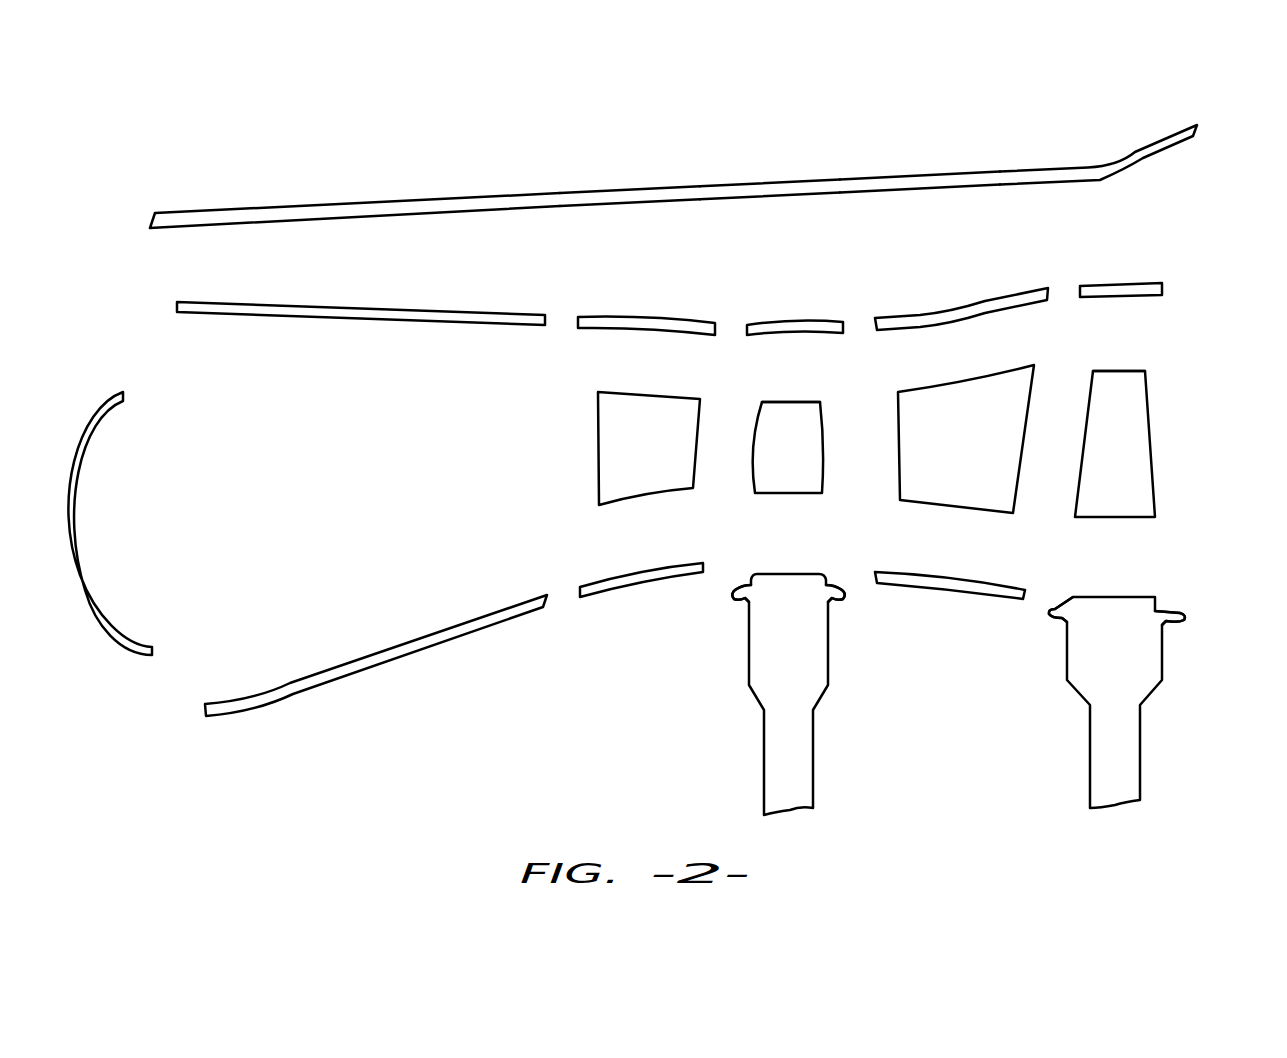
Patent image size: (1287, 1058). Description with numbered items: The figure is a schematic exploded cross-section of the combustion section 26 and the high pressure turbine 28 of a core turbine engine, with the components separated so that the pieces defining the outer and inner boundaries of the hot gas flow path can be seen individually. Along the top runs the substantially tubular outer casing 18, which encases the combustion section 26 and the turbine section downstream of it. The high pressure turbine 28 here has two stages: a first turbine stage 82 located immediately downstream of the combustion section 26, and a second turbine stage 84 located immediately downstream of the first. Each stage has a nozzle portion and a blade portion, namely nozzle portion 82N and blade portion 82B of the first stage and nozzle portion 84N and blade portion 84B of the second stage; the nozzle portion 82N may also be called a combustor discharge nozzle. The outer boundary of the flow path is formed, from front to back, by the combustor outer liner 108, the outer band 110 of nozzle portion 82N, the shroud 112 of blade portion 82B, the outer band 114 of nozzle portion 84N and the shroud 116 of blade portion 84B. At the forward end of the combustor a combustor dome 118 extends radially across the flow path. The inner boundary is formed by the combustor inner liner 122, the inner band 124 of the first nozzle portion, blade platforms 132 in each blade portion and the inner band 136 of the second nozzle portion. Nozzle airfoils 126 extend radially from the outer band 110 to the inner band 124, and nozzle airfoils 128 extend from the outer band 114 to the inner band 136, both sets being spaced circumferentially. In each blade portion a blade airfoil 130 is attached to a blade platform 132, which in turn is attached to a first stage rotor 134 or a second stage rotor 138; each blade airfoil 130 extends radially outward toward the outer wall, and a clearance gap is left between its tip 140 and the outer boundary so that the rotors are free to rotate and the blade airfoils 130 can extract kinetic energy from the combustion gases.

The outer casing 18 is at (275, 212).
The combustion section 26 is at (397, 170).
The high pressure turbine 28 is at (890, 138).
The first turbine stage 82 is at (717, 142).
The nozzle portion of first turbine stage 82N is at (650, 235).
The blade portion of first turbine stage 82B is at (774, 255).
The second turbine stage 84 is at (1029, 132).
The nozzle portion of second turbine stage 84N is at (939, 238).
The blade portion of second turbine stage 84B is at (1086, 210).
The outer liner 108 is at (410, 310).
The outer band 110 is at (638, 318).
The shroud 112 is at (798, 325).
The outer band 114 is at (940, 316).
The shroud 116 is at (1100, 285).
The combustor dome 118 is at (85, 548).
The inner liner 122 is at (413, 653).
The inner band 124 is at (622, 585).
The nozzle airfoil 126 is at (612, 445).
The nozzle airfoil 128 is at (972, 488).
The blade airfoil 130 is at (790, 475).
The blade platform 132 is at (743, 600).
The first stage rotor 134 is at (797, 755).
The inner band 136 is at (938, 587).
The second stage rotor 138 is at (1125, 760).
The tip 140 is at (796, 382).